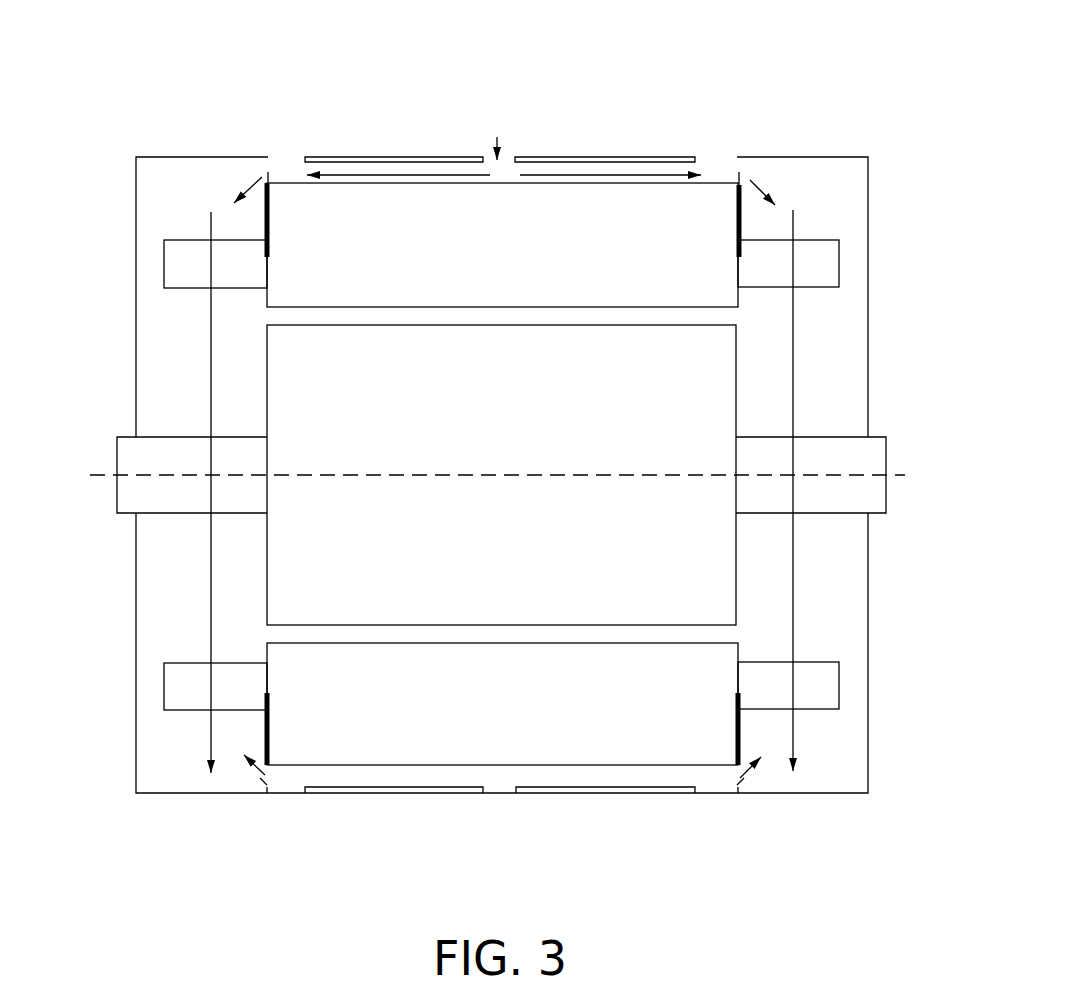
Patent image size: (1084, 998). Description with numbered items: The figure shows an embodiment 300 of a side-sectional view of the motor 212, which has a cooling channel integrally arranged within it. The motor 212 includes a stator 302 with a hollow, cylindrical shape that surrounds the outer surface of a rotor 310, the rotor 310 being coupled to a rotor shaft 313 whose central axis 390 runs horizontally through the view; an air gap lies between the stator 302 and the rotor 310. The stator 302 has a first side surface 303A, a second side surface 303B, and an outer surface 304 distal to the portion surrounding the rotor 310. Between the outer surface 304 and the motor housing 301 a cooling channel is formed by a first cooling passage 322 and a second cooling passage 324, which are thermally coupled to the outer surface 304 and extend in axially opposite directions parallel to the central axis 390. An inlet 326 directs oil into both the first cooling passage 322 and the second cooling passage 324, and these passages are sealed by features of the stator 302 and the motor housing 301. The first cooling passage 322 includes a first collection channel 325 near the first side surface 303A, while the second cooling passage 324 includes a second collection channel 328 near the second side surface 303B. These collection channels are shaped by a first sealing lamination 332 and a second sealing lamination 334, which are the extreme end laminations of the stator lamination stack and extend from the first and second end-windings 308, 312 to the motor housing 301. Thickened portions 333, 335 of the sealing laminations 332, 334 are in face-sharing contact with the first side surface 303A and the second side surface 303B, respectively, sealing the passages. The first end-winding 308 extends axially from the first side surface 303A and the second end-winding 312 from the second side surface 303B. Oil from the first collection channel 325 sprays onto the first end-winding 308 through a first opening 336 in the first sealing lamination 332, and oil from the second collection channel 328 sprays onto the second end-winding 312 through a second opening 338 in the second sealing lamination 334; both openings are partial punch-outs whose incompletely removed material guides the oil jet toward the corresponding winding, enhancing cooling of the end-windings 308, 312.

The embodiment 300 is at (840, 38).
The motor housing 301 is at (175, 157).
The stator 302 is at (430, 158).
The first side surface 303A is at (267, 297).
The second side surface 303B is at (738, 305).
The outer surface 304 is at (710, 185).
The first end-winding 308 is at (164, 240).
The rotor 310 is at (513, 449).
The second end-winding 312 is at (839, 240).
The rotor shaft 313 is at (187, 467).
The first cooling passage 322 is at (378, 165).
The second cooling passage 324 is at (623, 167).
The first collection channel 325 is at (287, 162).
The inlet 326 is at (512, 157).
The second collection channel 328 is at (705, 160).
The first sealing lamination 332 is at (265, 158).
The portion of first sealing lamination 333 is at (267, 218).
The second sealing lamination 334 is at (740, 158).
The portion of second sealing lamination 335 is at (739, 200).
The first opening 336 is at (262, 168).
The second opening 338 is at (742, 170).
The central axis 390 is at (690, 472).
The motor 212 is at (136, 793).